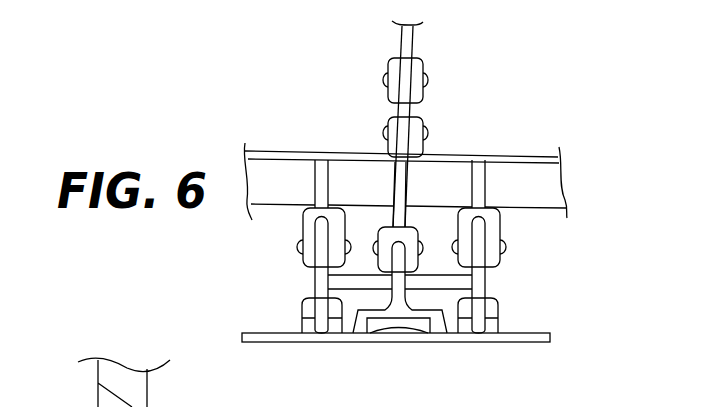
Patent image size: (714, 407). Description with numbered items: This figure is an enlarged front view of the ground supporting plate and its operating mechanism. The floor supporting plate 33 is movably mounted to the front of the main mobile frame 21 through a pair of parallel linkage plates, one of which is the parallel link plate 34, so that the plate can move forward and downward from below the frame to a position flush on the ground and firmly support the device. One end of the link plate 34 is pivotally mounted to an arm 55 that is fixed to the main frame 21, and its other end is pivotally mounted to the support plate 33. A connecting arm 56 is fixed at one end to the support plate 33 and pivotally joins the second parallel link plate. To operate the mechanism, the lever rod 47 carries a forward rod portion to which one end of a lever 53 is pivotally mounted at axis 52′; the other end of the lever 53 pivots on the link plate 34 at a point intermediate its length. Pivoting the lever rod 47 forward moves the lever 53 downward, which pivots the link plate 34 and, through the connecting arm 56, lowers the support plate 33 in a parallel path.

The main mobile frame 21 is at (538, 175).
The lever rod 47 is at (401, 46).
The axis 52′ is at (428, 84).
The lever 53 is at (393, 190).
The arm 55 is at (305, 213).
The parallel link plate 34 is at (314, 279).
The connecting arm 56 is at (370, 314).
The floor supporting plate 33 is at (541, 334).